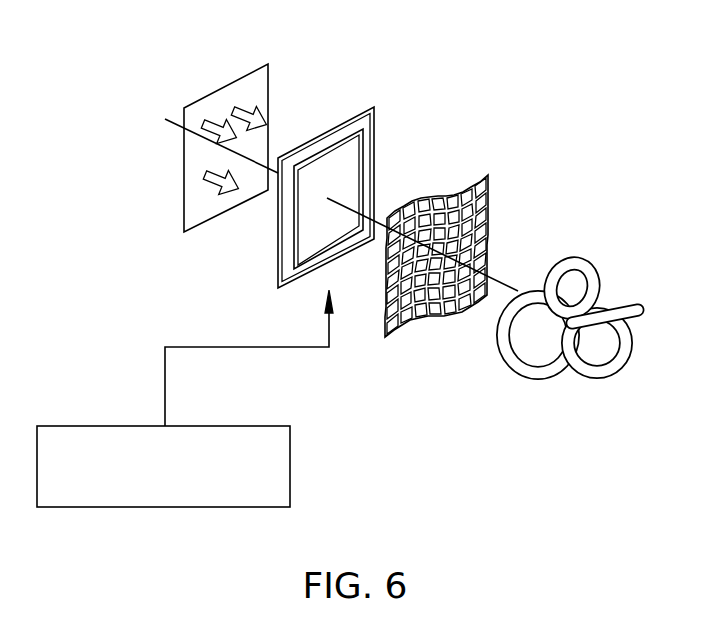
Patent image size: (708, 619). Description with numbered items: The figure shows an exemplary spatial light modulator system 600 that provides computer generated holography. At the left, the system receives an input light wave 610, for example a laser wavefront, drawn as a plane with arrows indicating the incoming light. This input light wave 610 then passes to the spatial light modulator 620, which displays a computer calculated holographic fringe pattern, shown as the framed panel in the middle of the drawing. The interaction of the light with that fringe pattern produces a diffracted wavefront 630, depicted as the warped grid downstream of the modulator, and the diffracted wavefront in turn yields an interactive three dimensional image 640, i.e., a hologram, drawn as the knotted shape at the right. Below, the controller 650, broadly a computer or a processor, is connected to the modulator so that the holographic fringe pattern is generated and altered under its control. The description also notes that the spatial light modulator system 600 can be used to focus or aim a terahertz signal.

The spatial light modulator system 600 is at (566, 43).
The input light wave 610 is at (173, 118).
The spatial light modulator 620 is at (348, 120).
The phase mask / grid element 630 is at (486, 172).
The interactive 3D image 640 is at (600, 247).
The controller 650 is at (142, 488).